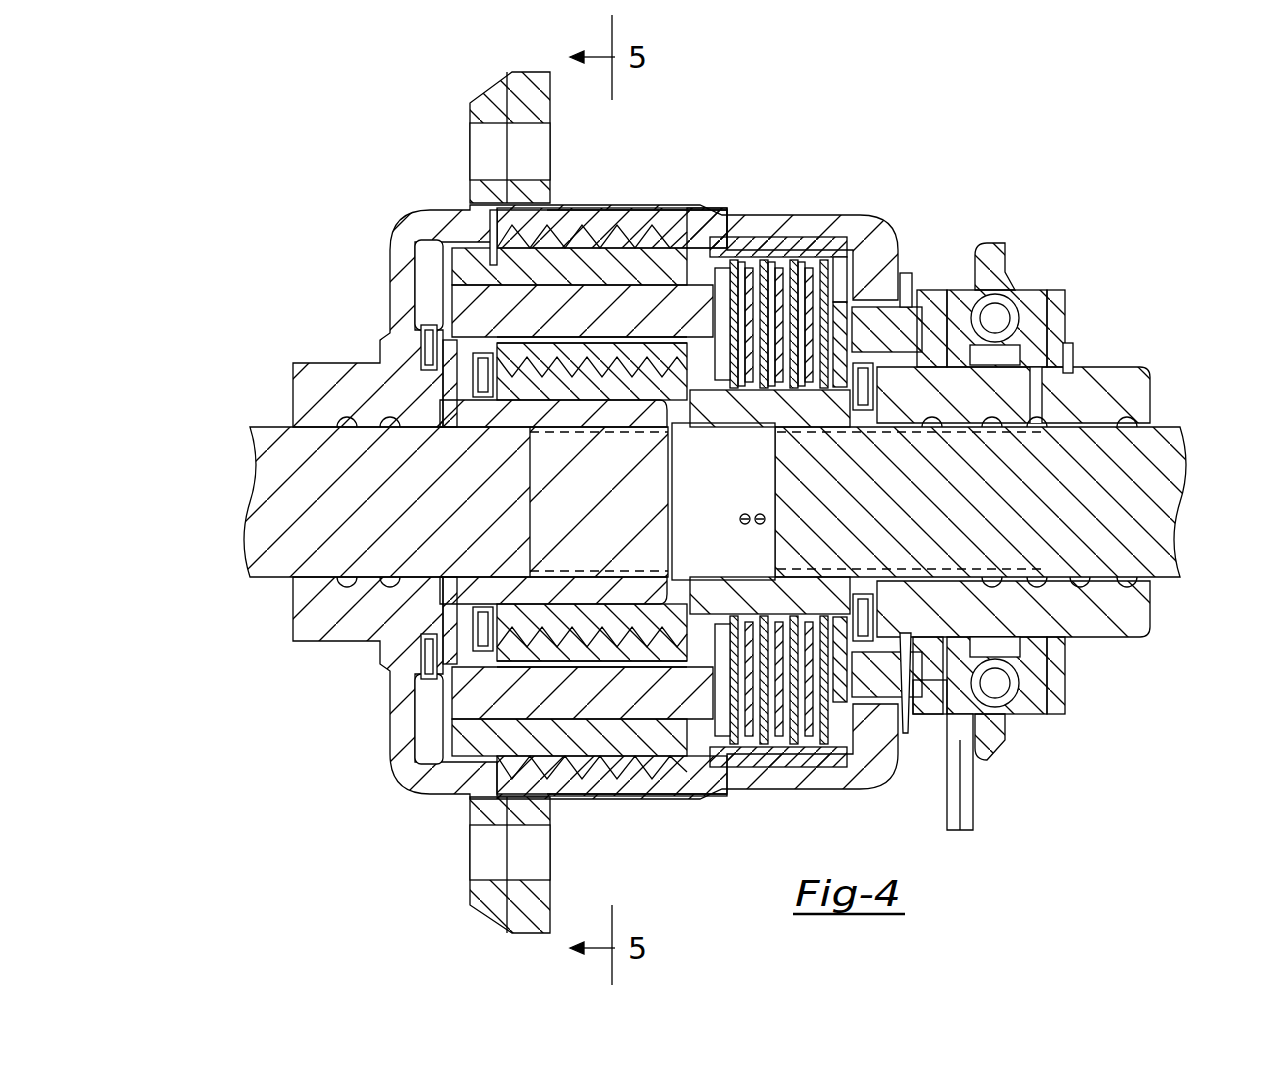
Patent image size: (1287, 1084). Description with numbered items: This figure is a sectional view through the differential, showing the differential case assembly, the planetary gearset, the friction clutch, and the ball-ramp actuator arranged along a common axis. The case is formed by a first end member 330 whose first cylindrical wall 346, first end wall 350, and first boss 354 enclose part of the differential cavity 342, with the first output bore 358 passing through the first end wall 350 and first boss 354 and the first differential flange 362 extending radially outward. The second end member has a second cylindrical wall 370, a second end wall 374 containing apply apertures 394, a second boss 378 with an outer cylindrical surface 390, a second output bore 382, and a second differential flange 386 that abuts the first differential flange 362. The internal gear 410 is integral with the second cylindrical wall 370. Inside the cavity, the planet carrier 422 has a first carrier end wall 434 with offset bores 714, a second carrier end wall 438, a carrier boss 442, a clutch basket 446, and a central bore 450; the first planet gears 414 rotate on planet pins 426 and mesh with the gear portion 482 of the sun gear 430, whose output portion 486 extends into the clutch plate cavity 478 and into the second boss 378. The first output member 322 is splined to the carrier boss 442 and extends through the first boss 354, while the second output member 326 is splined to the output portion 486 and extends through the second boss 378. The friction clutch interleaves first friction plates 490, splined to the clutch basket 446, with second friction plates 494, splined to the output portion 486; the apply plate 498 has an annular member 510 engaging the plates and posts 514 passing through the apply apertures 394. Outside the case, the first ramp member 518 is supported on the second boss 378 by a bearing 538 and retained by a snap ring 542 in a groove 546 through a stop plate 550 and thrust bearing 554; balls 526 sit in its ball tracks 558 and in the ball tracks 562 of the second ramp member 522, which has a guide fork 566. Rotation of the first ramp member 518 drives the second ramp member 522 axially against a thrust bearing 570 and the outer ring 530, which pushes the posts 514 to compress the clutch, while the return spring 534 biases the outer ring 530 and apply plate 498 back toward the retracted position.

The first output member 322 is at (257, 502).
The second output member 326 is at (1157, 520).
The first end member 330 is at (488, 924).
The differential cavity 342 is at (430, 253).
The first cylindrical wall 346 is at (477, 240).
The first end wall 350 is at (403, 310).
The first boss 354 is at (313, 393).
The first output bore 358 is at (337, 587).
The first differential flange 362 is at (488, 107).
The second cylindrical wall 370 is at (755, 235).
The second end wall 374 is at (893, 255).
The second boss 378 is at (1123, 607).
The second output bore 382 is at (1085, 420).
The second differential flange 386 is at (540, 108).
The outer cylindrical surface 390 is at (1140, 640).
The apply apertures 394 is at (880, 293).
The internal gear 410 is at (668, 242).
The first planet gears 414 is at (563, 248).
The planet carrier 422 is at (457, 429).
The planet pins 426 is at (627, 275).
The sun gear 430 is at (723, 576).
The first carrier end wall 434 is at (450, 790).
The second carrier end wall 438 is at (710, 743).
The carrier boss 442 is at (600, 590).
The clutch basket 446 is at (777, 250).
The central bore 450 is at (460, 610).
The clutch plate cavity 478 is at (837, 257).
The gear portion 482 is at (540, 380).
The output portion 486 is at (845, 420).
The first friction plates 490 is at (747, 277).
The second friction plates 494 is at (740, 398).
The apply plate 498 is at (842, 723).
The annular member 510 is at (840, 290).
The posts 514 is at (905, 422).
The first ramp member 518 is at (1010, 263).
The second ramp member 522 is at (957, 745).
The spherical balls 526 is at (1007, 323).
The outer ring 530 is at (927, 707).
The return spring 534 is at (907, 727).
The bearing 538 is at (993, 643).
The snap ring 542 is at (1070, 357).
The groove 546 is at (1075, 400).
The stop plate 550 is at (1057, 310).
The thrust bearing 554 is at (1040, 680).
The ball tracks 558 is at (1013, 700).
The ball tracks 562 is at (975, 645).
The guide fork 566 is at (963, 830).
The thrust bearing 570 is at (953, 362).
The offset bores 714 is at (470, 253).